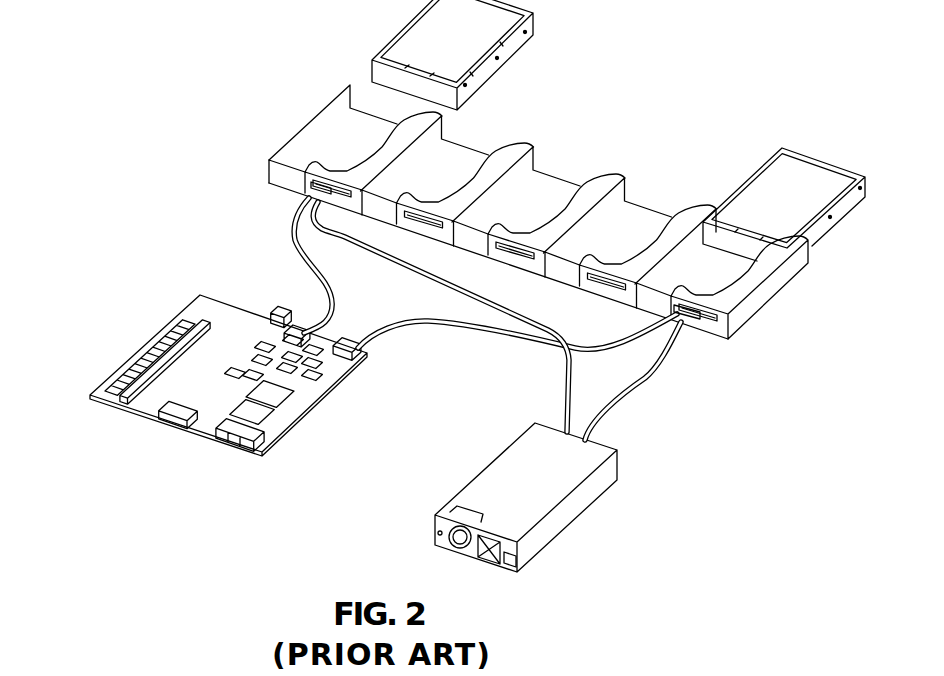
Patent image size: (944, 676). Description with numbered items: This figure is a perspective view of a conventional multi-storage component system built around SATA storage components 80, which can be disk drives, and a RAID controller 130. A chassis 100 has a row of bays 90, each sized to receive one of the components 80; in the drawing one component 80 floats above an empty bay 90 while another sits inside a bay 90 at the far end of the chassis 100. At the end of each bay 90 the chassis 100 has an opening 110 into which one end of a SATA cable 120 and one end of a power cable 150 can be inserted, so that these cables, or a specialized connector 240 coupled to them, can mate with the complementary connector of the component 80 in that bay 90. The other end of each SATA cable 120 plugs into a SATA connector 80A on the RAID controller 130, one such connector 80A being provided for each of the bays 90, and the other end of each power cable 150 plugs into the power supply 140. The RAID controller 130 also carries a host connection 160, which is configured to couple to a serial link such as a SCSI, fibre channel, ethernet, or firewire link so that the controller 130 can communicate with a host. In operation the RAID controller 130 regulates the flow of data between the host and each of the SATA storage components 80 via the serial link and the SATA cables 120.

The SATA storage component 80 is at (503, 62).
The SATA connector 80A is at (363, 362).
The bay 90 is at (349, 130).
The chassis 100 is at (760, 304).
The opening 110 is at (418, 236).
The SATA cable 120 is at (307, 260).
The RAID controller 130 is at (192, 297).
The power supply 140 is at (575, 518).
The power cable 150 is at (563, 394).
The host connection 160 is at (204, 443).
The connector 240 is at (305, 185).